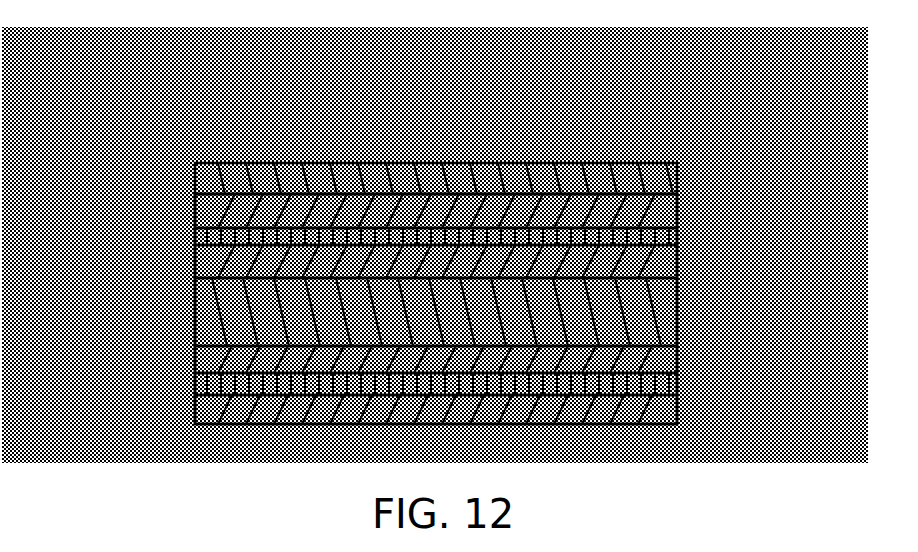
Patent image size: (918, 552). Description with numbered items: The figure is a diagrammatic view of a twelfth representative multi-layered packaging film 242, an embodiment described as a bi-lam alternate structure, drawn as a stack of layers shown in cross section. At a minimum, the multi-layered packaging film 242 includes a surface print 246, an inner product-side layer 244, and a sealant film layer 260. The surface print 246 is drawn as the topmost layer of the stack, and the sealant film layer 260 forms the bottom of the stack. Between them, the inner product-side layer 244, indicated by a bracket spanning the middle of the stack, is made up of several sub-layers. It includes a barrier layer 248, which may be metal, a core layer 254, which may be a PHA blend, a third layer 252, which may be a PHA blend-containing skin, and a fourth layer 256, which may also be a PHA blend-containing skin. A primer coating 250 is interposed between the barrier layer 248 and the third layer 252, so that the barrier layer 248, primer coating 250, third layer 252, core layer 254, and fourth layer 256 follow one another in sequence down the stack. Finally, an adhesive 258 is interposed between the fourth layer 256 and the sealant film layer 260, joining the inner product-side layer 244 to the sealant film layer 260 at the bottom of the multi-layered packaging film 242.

The multi-layered packaging film 242 is at (150, 105).
The inner product-side layer 244 is at (165, 200).
The surface print 246 is at (672, 175).
The barrier layer 248 is at (680, 208).
The primer coating 250 is at (680, 237).
The third layer 252 is at (680, 258).
The core layer 254 is at (660, 332).
The fourth layer 256 is at (675, 365).
The adhesive 258 is at (680, 398).
The sealant film layer 260 is at (680, 415).